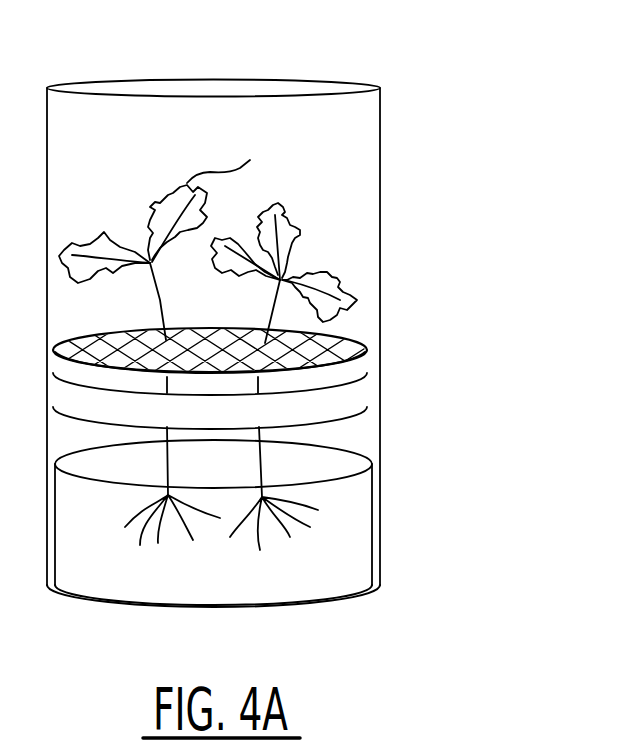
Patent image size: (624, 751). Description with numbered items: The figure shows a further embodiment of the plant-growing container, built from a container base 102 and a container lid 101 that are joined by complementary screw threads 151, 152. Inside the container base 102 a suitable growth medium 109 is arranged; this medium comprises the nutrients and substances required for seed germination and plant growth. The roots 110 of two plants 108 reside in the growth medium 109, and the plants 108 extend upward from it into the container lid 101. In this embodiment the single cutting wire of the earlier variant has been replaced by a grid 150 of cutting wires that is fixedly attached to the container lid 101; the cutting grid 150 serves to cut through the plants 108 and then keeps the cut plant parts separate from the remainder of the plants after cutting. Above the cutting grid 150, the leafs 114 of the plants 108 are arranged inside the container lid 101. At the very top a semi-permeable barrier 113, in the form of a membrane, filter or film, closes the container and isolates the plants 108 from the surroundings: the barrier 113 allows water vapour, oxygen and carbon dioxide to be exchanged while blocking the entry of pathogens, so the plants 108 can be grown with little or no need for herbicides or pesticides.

The container lid 101 is at (380, 197).
The semi-permeable barrier 113 is at (327, 88).
The leafs 114 is at (266, 210).
The plants 108 is at (268, 322).
The grid of cutting wires 150 is at (352, 345).
The screw thread 151 is at (365, 395).
The screw thread 152 is at (291, 408).
The container base 102 is at (378, 522).
The growth medium 109 is at (337, 577).
The roots 110 is at (167, 545).